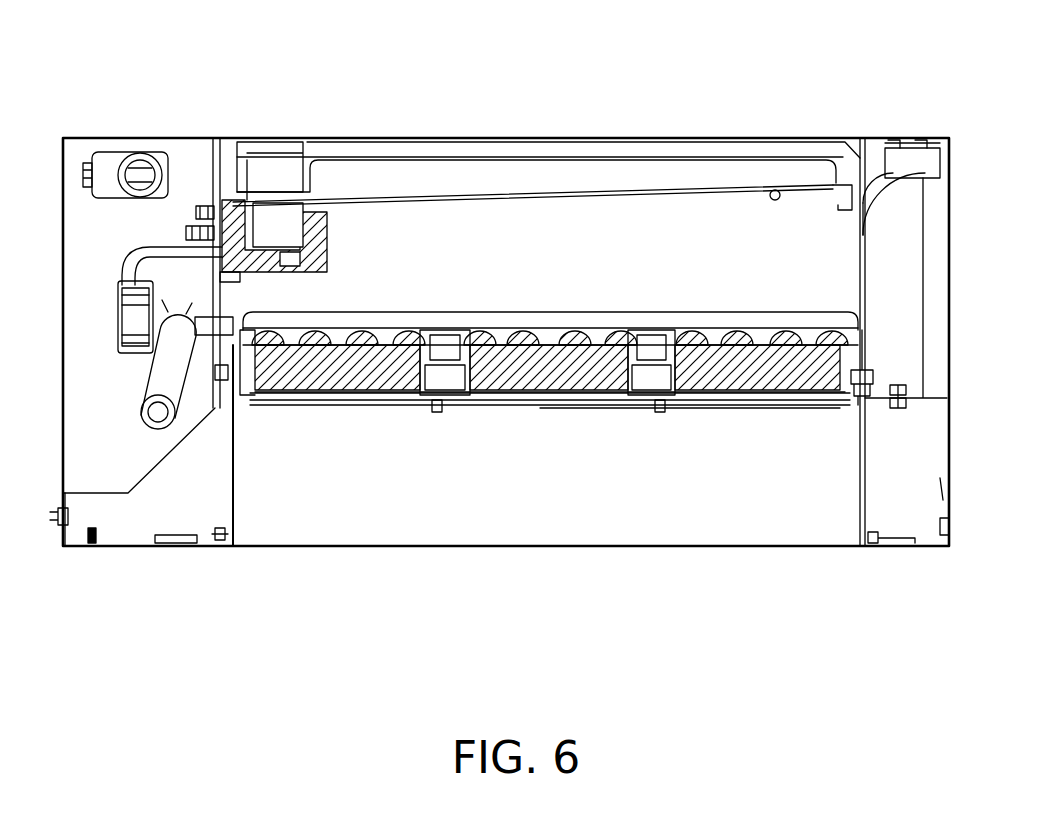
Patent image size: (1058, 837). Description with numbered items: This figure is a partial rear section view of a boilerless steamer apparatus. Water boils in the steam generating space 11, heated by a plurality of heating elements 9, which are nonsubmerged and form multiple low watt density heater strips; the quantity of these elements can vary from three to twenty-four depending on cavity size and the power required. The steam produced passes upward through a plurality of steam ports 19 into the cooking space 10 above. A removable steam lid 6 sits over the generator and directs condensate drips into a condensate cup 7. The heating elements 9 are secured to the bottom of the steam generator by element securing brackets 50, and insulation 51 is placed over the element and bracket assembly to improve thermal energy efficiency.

The removable steam lid 6 is at (373, 180).
The condensate cup 7 is at (258, 233).
The heating elements 9 is at (548, 312).
The cooking space 10 is at (540, 177).
The steam generating space 11 is at (650, 256).
The steam ports 19 is at (897, 206).
The element securing brackets 50 is at (394, 356).
The insulation 51 is at (557, 365).